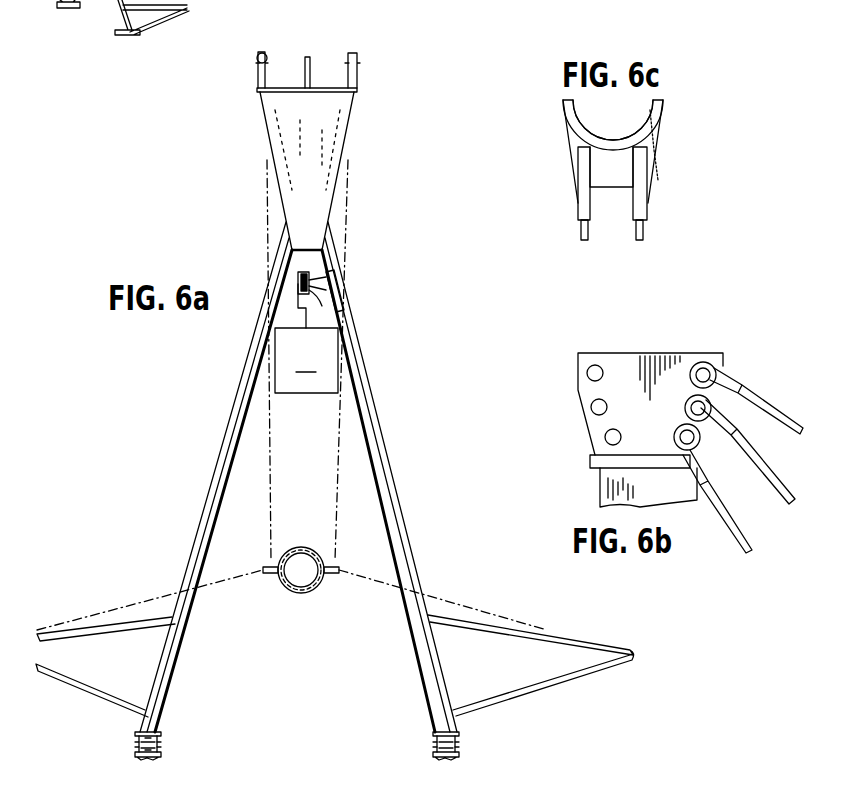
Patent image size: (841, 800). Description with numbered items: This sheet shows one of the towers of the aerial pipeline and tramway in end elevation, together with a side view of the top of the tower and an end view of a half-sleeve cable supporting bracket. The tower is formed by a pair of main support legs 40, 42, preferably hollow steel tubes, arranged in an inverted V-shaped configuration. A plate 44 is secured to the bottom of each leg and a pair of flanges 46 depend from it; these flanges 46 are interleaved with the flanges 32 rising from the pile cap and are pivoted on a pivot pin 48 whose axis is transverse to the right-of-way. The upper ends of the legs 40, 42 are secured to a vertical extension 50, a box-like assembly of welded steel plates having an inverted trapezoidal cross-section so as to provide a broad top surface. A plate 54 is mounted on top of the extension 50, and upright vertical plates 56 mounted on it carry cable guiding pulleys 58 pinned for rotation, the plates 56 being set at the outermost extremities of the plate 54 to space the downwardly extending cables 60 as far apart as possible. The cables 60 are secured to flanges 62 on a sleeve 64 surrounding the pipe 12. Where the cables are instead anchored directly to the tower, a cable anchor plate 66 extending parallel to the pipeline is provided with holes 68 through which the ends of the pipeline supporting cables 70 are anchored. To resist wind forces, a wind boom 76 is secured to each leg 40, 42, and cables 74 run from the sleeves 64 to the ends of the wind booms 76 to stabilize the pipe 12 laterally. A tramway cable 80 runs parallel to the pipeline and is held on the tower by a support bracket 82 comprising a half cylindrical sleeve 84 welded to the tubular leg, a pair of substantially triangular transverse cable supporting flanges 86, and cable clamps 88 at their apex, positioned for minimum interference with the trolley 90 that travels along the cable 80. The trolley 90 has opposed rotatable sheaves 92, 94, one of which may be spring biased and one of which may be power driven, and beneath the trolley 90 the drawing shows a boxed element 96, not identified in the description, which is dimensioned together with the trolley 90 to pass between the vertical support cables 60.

In FIG. 6a, the pipe 12 is at (304, 588).
In FIG. 6a, the flanges 32 is at (162, 755).
In FIG. 6a, the main support leg 40 is at (372, 401).
In FIG. 6a, the main support leg 42 is at (236, 400).
In FIG. 6a, the plate 44 is at (160, 733).
In FIG. 6a, the flanges 46 is at (138, 737).
In FIG. 6a, the pivot pin 48 is at (136, 746).
In FIG. 6a, the vertical extension 50 is at (336, 147).
In FIG. 6b, the vertical extension 50 is at (603, 492).
In FIG. 6a, the plate 54 is at (350, 91).
In FIG. 6b, the plate 54 is at (589, 462).
In FIG. 6a, the upright vertical plates 56 is at (258, 64).
In FIG. 6a, the cable guiding pulleys 58 is at (266, 56).
In FIG. 6a, the cables 60 is at (266, 192).
In FIG. 6a, the flanges 62 is at (270, 575).
In FIG. 6a, the sleeve 64 is at (306, 547).
In FIG. 6b, the cable anchor plate 66 is at (645, 362).
In FIG. 6b, the holes 68 is at (587, 373).
In FIG. 6b, the pipeline supporting cables 70 is at (766, 410).
In FIG. 6a, the cables 74 is at (450, 600).
In FIG. 6a, the wind boom 76 is at (510, 632).
In FIG. 6a, the tramway cable 80 is at (299, 279).
In FIG. 6c, the support bracket 82 is at (670, 154).
In FIG. 6a, the half cylindrical sleeve 84 is at (343, 293).
In FIG. 6c, the half cylindrical sleeve 84 is at (588, 136).
In FIG. 6a, the cable supporting flanges 86 is at (312, 282).
In FIG. 6c, the cable supporting flanges 86 is at (583, 206).
In FIG. 6a, the cable clamps 88 is at (311, 275).
In FIG. 6c, the cable clamps 88 is at (583, 233).
In FIG. 6a, the trolley 90 is at (297, 300).
In FIG. 6a, the sheave 92 is at (305, 270).
In FIG. 6a, the sheave 94 is at (312, 300).
In FIG. 6a, the control box 96 is at (306, 360).